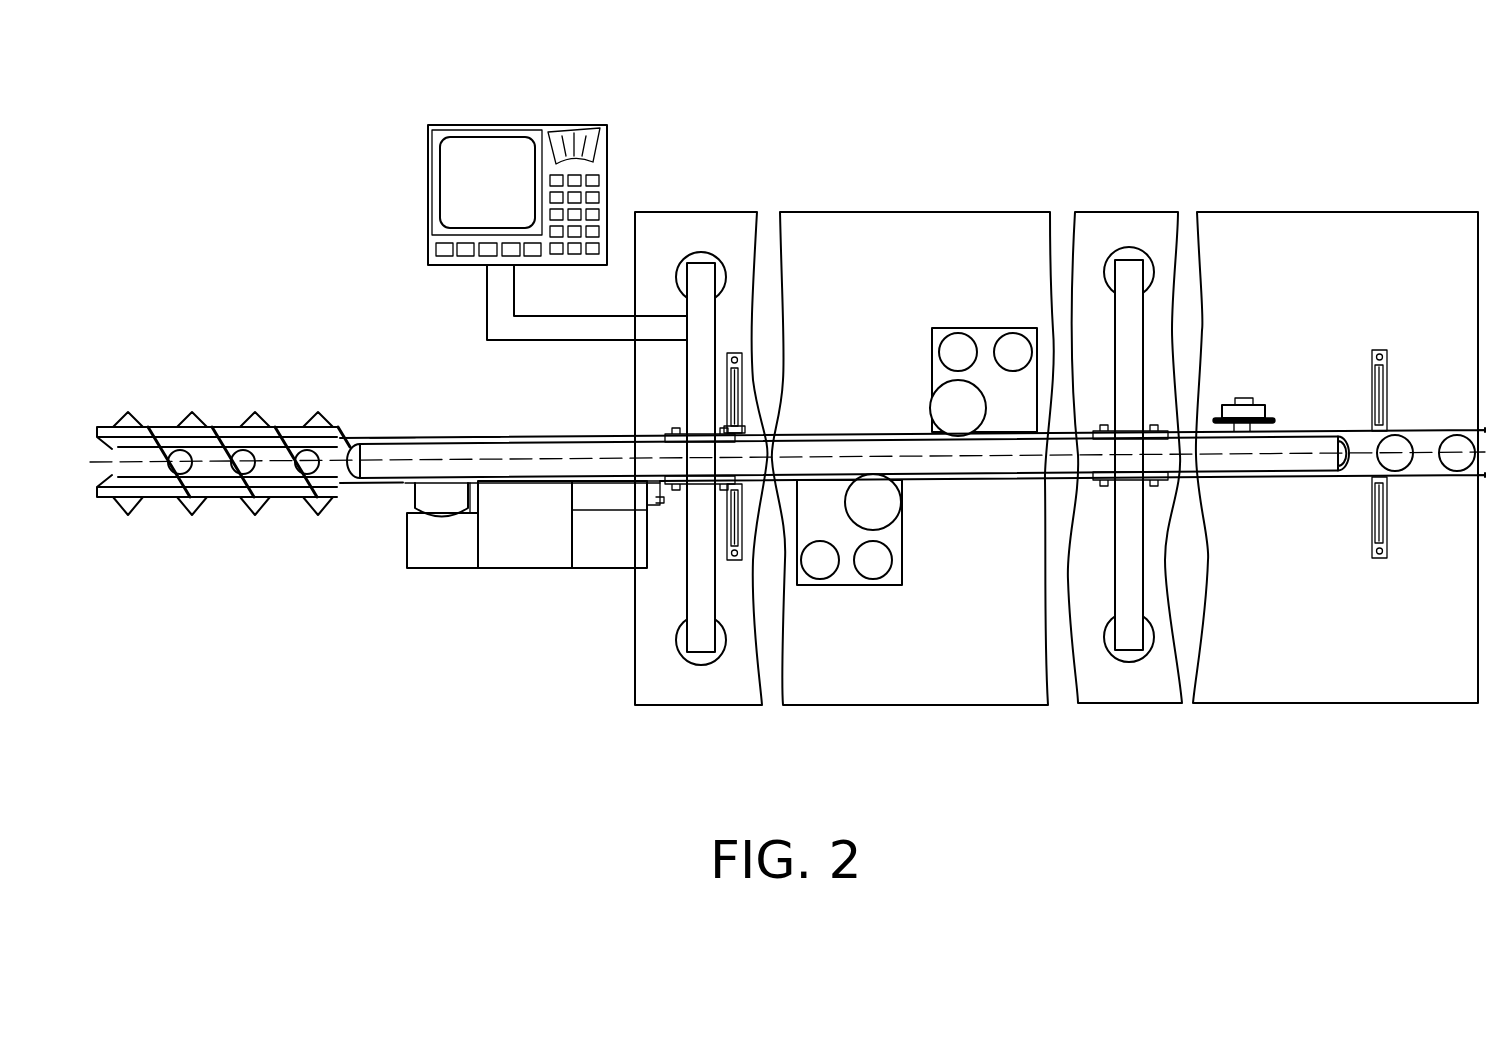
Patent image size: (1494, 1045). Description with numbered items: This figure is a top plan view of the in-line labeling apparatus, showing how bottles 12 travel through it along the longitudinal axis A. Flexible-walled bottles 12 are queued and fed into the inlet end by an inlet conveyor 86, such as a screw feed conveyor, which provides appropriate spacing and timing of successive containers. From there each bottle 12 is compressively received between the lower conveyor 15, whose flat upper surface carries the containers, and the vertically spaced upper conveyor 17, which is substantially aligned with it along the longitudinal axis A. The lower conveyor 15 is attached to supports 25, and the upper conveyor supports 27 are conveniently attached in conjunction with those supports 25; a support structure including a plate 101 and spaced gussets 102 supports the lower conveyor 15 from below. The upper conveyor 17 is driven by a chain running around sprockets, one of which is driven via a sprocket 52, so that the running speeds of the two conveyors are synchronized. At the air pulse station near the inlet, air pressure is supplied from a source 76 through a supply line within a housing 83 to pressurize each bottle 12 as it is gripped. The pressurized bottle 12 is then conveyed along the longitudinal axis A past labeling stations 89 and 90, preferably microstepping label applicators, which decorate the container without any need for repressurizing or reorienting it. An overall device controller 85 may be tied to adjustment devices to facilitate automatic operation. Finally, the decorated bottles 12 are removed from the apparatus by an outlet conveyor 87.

The bottle 12 is at (247, 473).
The lower conveyor 15 is at (479, 422).
The upper conveyor 17 is at (393, 425).
The support 25 is at (688, 637).
The upper conveyor support 27 is at (697, 385).
The sprocket 52 is at (1265, 408).
The air pressure source 76 is at (415, 620).
The housing 83 is at (508, 555).
The device controller 85 is at (598, 170).
The inlet conveyor 86 is at (212, 385).
The outlet conveyor 87 is at (1441, 500).
The labeling station 89 is at (845, 577).
The labeling station 90 is at (988, 330).
The plate 101 is at (1302, 683).
The gusset 102 is at (1377, 507).
The longitudinal axis A is at (1318, 453).